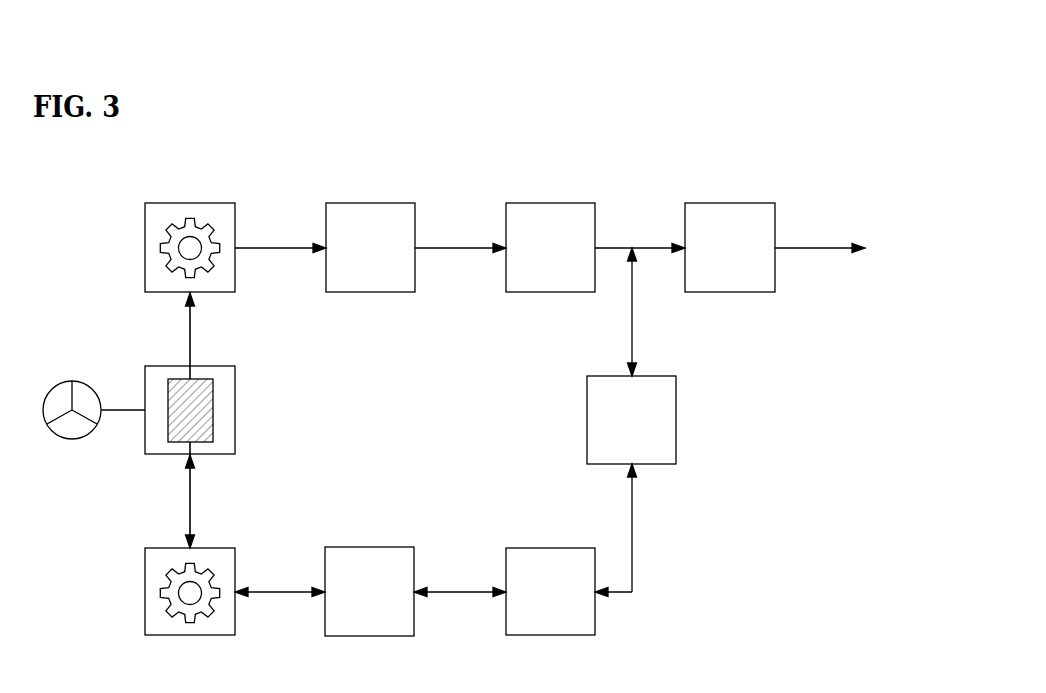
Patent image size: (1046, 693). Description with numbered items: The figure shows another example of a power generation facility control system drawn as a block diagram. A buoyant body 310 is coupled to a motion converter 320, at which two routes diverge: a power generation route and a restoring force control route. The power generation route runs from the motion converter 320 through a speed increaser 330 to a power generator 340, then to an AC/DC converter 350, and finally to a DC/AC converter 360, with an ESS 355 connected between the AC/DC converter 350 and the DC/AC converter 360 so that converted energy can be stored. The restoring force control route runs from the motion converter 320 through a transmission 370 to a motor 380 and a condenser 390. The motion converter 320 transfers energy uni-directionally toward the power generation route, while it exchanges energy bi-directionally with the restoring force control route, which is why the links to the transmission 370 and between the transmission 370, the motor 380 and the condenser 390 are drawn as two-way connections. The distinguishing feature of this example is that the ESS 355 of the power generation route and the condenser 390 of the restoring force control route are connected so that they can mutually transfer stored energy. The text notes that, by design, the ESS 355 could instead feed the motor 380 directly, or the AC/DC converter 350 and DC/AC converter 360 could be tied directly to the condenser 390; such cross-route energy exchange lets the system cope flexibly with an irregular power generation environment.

The buoyant body 310 is at (62, 384).
The motion converter 320 is at (235, 410).
The speed increaser 330 is at (166, 203).
The power generator 340 is at (346, 203).
The AC/DC converter 350 is at (526, 203).
The ESS 355 is at (676, 419).
The DC/AC converter 360 is at (705, 203).
The transmission 370 is at (165, 635).
The motor 380 is at (346, 636).
The condenser 390 is at (526, 635).